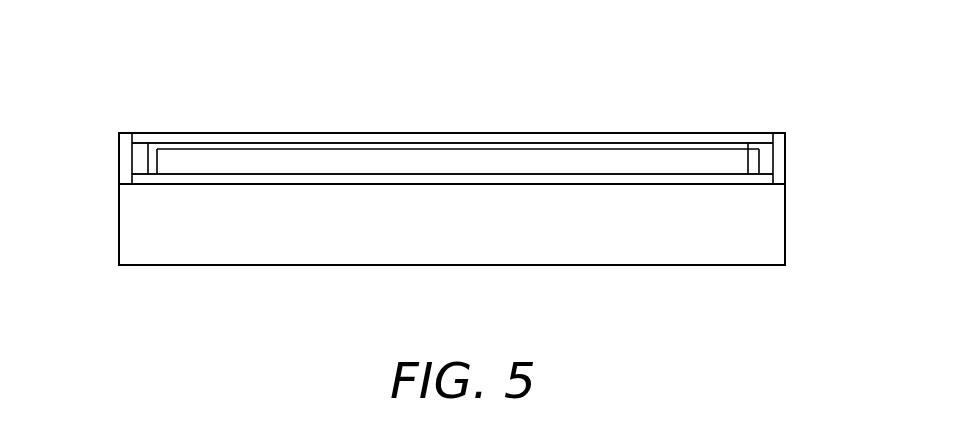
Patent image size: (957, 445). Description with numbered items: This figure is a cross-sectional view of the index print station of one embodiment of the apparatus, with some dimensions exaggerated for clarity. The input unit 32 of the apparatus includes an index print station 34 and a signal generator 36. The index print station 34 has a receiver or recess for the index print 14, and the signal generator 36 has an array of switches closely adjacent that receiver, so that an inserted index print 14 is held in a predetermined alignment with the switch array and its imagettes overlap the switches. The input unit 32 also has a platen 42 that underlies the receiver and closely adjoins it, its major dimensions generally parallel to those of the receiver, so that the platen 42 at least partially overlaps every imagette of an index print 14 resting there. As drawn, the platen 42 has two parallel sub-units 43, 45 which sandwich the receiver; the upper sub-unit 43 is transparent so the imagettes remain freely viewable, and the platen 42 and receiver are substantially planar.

The index print 14 is at (210, 150).
The input unit 32 is at (352, 118).
The index print station 34 is at (787, 157).
The signal generator 36 is at (635, 266).
The platen 42 is at (578, 73).
The upper sub-unit 43 is at (435, 133).
The lower sub-unit 45 is at (520, 133).